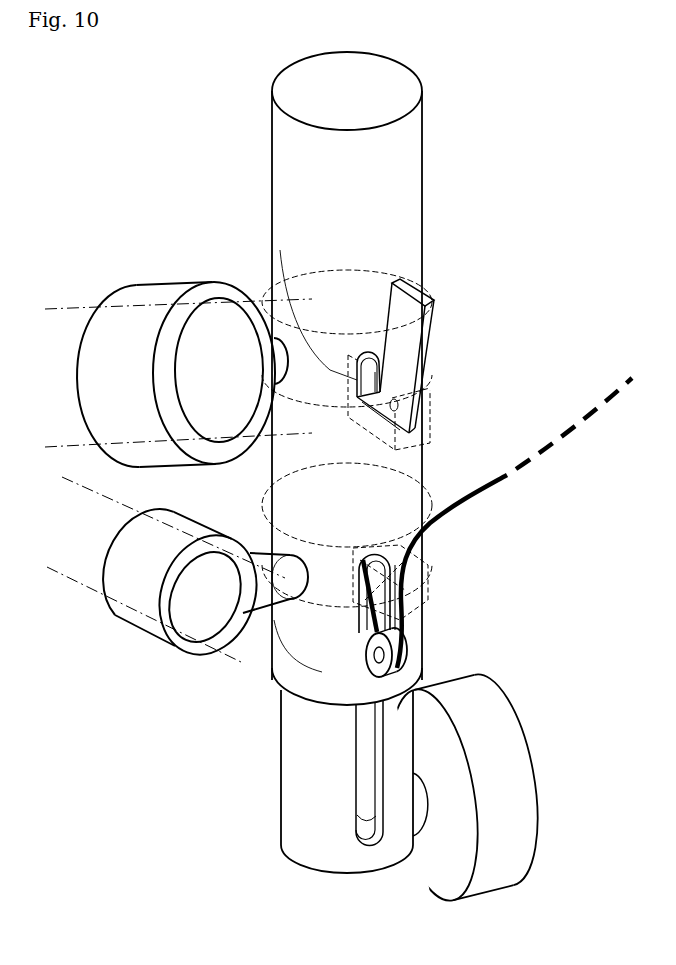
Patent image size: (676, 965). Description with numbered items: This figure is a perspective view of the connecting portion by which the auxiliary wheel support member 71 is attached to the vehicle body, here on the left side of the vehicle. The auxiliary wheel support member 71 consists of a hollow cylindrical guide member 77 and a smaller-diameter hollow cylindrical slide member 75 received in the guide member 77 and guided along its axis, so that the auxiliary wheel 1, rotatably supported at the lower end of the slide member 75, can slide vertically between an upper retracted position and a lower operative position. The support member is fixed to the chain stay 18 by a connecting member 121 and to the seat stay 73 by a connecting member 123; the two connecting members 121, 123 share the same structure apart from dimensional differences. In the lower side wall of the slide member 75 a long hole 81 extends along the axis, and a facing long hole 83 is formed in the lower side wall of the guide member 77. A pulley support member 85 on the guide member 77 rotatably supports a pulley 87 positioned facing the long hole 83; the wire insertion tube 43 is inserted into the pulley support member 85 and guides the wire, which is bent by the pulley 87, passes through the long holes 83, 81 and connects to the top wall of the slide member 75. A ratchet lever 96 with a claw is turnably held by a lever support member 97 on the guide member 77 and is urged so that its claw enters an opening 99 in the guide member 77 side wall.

The auxiliary wheel 1 is at (513, 806).
The chain stay 18 is at (72, 582).
The wire insertion tube 43 is at (483, 492).
The auxiliary wheel support member 71 is at (389, 485).
The seat stay 73 is at (66, 309).
The slide member 75 is at (300, 776).
The guide member 77 is at (413, 142).
The long hole 81 is at (363, 793).
The long hole 83 is at (358, 628).
The pulley support member 85 is at (425, 607).
The pulley 87 is at (410, 658).
The lever 96 is at (413, 302).
The lever support member 97 is at (412, 420).
The opening 99 is at (302, 292).
The connecting member 121 is at (153, 637).
The connecting member 123 is at (147, 292).